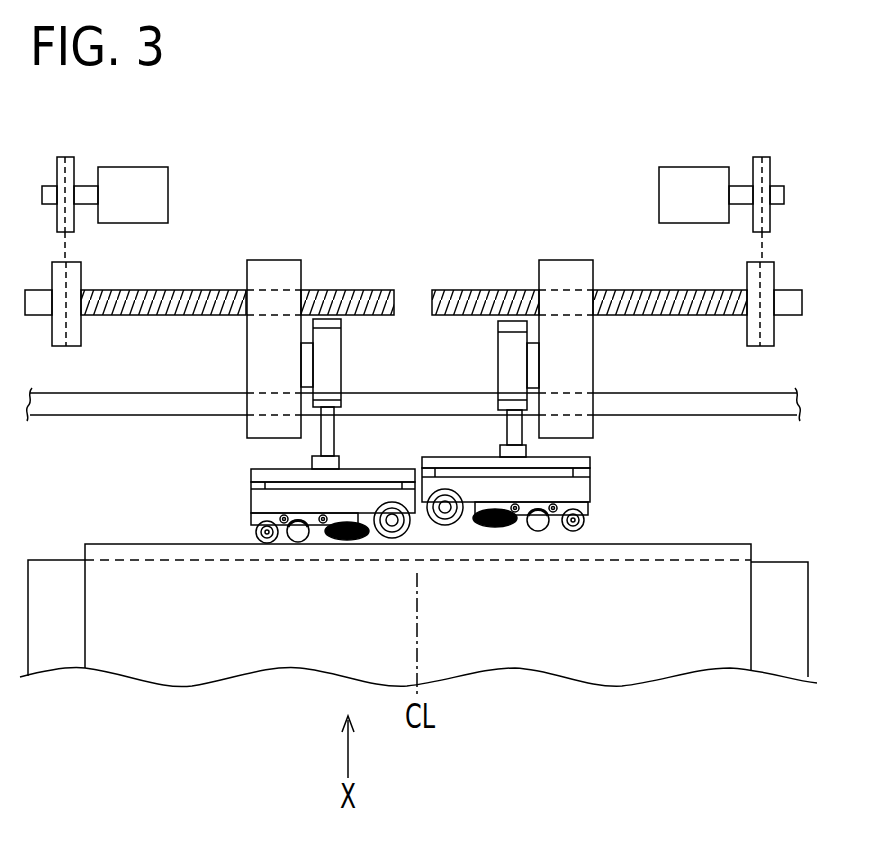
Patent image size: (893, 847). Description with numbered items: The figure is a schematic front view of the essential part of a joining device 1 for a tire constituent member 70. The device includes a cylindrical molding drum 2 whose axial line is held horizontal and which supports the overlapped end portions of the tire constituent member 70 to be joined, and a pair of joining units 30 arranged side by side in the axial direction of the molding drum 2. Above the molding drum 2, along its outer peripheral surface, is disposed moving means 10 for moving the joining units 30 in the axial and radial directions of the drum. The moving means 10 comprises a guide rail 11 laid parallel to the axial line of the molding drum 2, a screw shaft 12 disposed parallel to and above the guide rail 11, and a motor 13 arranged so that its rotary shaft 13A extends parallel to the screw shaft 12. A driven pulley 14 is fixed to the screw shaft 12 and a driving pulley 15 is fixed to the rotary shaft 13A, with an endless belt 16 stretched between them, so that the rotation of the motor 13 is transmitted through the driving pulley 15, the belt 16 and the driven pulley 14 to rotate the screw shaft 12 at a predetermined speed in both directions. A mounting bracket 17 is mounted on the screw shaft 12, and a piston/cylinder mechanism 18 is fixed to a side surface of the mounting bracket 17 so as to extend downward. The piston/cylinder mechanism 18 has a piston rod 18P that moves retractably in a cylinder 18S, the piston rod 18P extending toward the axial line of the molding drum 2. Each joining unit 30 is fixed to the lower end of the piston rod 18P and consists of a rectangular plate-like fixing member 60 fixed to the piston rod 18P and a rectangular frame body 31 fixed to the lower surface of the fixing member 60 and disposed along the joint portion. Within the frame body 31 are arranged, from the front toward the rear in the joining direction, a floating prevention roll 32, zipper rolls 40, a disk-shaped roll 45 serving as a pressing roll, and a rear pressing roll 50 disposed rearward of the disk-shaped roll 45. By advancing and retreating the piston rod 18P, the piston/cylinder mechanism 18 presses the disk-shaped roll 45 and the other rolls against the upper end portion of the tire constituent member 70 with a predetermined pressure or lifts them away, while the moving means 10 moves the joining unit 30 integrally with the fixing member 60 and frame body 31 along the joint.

The joining device 1 is at (407, 186).
The molding drum 2 is at (418, 572).
The moving means 10 is at (411, 445).
The guide rail 11 is at (128, 408).
The screw shaft 12 is at (207, 290).
The motor 13 is at (148, 167).
The rotary shaft 13A is at (87, 190).
The driven pulley 14 is at (73, 333).
The driving pulley 15 is at (63, 157).
The endless belt 16 is at (66, 247).
The mounting bracket 17 is at (277, 265).
The piston/cylinder mechanism 18 is at (420, 394).
The cylinder 18S is at (340, 338).
The piston rod 18P is at (334, 436).
The joining unit 30 is at (420, 525).
The frame body 31 is at (251, 497).
The floating prevention roll 32 is at (273, 545).
The zipper rolls 40 is at (300, 545).
The disk-shaped roll 45 is at (348, 545).
The rear pressing roll 50 is at (397, 540).
The fixing member 60 is at (251, 470).
The tire constituent member 70 is at (705, 550).